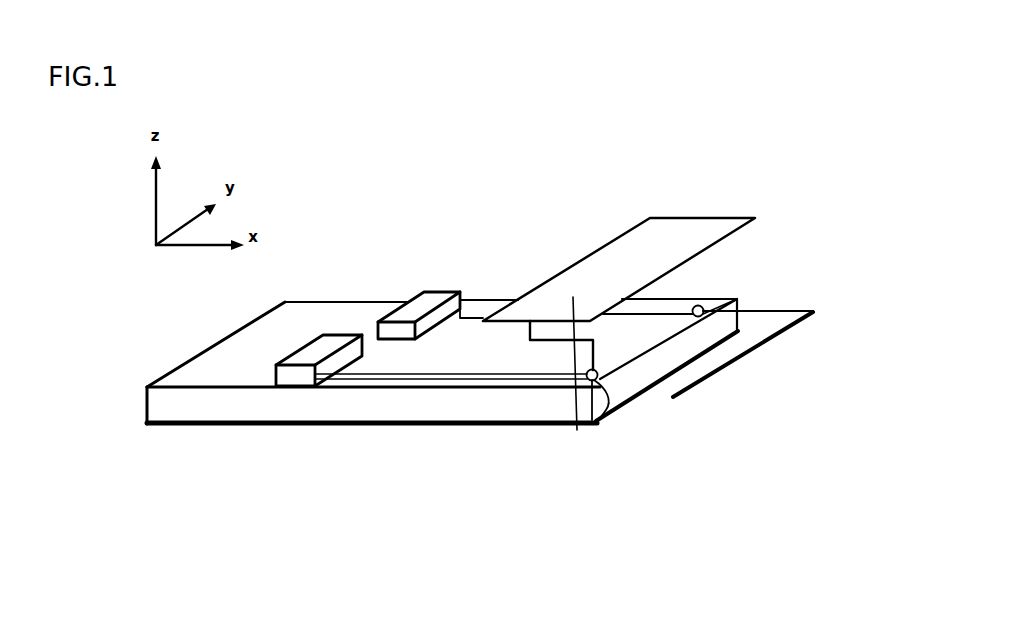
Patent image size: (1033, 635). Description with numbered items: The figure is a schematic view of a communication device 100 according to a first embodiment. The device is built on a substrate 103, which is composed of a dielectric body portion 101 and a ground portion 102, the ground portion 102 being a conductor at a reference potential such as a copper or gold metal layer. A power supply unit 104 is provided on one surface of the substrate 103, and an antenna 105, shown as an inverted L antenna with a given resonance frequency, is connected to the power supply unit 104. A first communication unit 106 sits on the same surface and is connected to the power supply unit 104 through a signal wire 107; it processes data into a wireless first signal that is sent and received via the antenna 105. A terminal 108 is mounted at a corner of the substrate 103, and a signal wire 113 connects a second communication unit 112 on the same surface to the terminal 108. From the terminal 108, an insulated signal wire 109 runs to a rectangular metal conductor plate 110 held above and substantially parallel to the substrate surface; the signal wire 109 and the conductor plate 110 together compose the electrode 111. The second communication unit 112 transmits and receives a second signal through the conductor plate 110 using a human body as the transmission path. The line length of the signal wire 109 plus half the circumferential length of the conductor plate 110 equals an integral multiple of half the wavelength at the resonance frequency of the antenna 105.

The communication device 100 is at (681, 143).
The dielectric body portion 101 is at (161, 409).
The ground portion 102 is at (137, 484).
The substrate 103 is at (434, 422).
The power supply unit 104 is at (701, 306).
The antenna 105 is at (770, 311).
The first communication unit 106 is at (417, 310).
The signal wire 107 is at (482, 317).
The terminal 108 is at (596, 421).
The signal wire 109 is at (533, 342).
The conductor plate 110 is at (577, 430).
The electrode 111 is at (607, 518).
The second communication unit 112 is at (323, 348).
The signal wire 113 is at (456, 376).